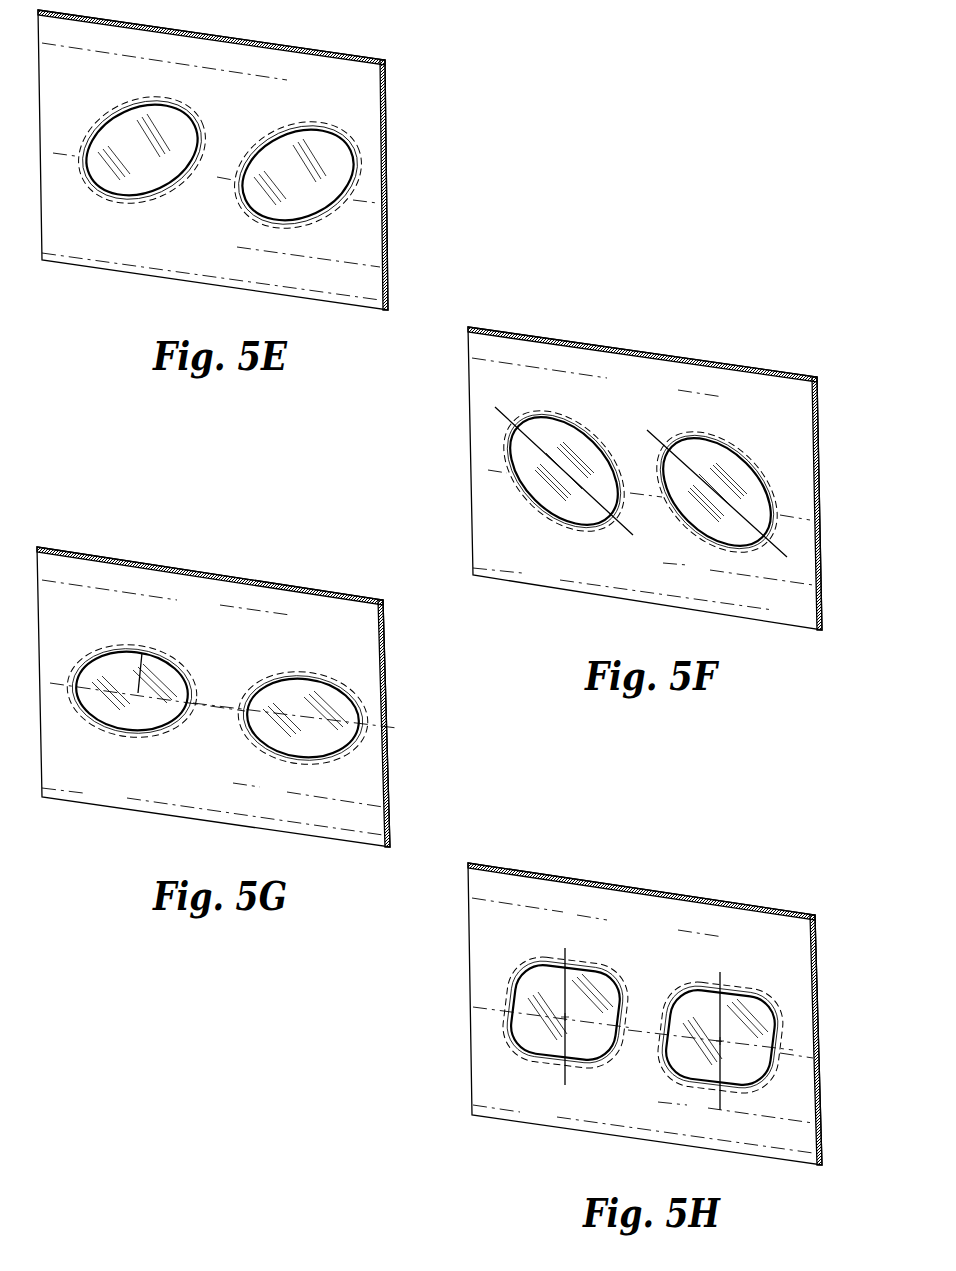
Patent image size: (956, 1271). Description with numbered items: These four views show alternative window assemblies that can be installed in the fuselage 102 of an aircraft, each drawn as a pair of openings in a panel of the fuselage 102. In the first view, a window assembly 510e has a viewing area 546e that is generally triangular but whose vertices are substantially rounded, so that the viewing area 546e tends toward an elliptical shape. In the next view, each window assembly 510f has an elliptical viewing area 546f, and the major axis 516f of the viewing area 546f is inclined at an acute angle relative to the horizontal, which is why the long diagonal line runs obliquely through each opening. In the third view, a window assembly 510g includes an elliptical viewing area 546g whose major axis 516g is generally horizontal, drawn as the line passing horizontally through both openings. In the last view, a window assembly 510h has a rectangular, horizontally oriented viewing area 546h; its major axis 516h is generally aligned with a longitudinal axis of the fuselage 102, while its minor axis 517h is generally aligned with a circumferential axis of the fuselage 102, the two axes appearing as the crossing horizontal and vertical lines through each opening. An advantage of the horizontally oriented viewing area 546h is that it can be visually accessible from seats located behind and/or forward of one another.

In FIG. 5E, the fuselage 102 is at (408, 143).
In FIG. 5F, the fuselage 102 is at (749, 342).
In FIG. 5G, the fuselage 102 is at (406, 680).
In FIG. 5H, the fuselage 102 is at (431, 973).
In FIG. 5E, the viewing area 546e is at (283, 157).
In FIG. 5E, the window assembly 510e is at (285, 246).
In FIG. 5F, the elliptical viewing area 546f is at (568, 437).
In FIG. 5F, the major axis 516f is at (653, 437).
In FIG. 5F, the window assembly 510f is at (545, 534).
In FIG. 5G, the elliptical viewing area 546g is at (287, 693).
In FIG. 5G, the major axis 516g is at (137, 647).
In FIG. 5G, the window assembly 510g is at (125, 749).
In FIG. 5H, the minor axis 517h is at (566, 948).
In FIG. 5H, the viewing area 546h is at (692, 992).
In FIG. 5H, the major axis 516h is at (523, 1013).
In FIG. 5H, the window assembly 510h is at (732, 1108).